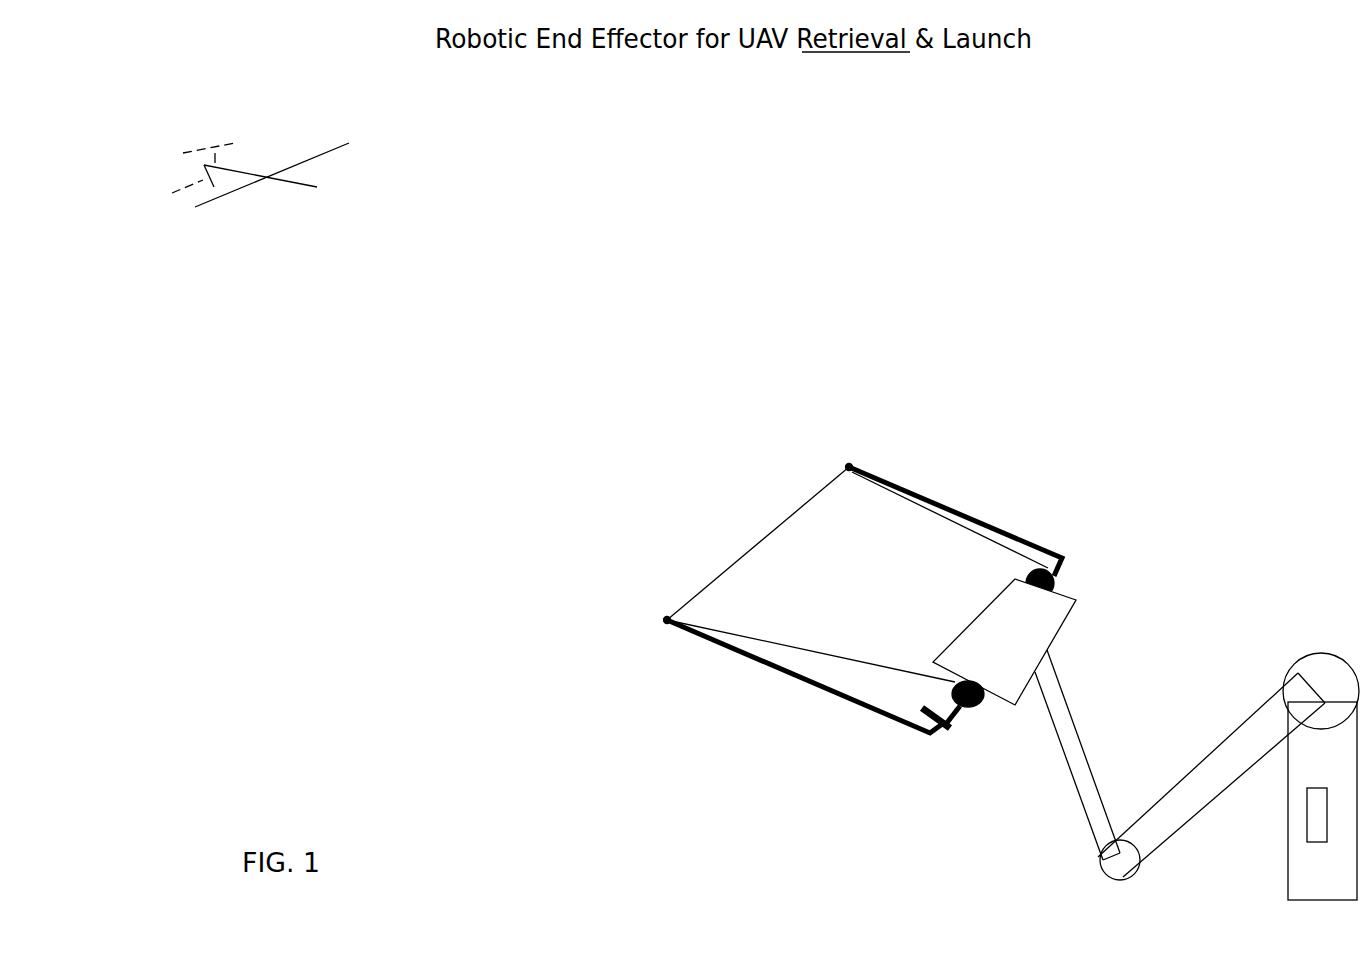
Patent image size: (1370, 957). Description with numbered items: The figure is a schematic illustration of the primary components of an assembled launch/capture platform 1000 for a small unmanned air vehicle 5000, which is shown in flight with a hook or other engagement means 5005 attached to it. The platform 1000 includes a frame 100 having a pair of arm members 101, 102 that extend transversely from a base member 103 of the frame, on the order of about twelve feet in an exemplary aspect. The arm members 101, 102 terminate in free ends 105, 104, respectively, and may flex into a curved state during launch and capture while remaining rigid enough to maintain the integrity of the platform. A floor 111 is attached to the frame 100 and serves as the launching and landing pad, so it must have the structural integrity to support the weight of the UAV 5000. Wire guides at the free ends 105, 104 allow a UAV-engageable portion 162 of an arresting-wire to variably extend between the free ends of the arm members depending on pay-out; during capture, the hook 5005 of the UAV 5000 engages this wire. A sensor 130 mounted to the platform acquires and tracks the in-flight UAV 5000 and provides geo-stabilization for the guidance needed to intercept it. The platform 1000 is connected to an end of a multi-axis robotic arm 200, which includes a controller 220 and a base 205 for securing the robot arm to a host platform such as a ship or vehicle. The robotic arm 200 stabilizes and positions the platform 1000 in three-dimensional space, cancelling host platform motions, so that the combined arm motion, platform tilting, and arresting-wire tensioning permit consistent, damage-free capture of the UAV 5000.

The unmanned air vehicle 5000 is at (373, 163).
The hook or other engagement means 5005 is at (243, 184).
The launch/capture platform 1000 is at (1038, 322).
The frame 100 is at (1088, 560).
The arm member 101 is at (800, 693).
The arm member 102 is at (968, 503).
The base member 103 is at (960, 712).
The free end 104 is at (852, 453).
The free end 105 is at (667, 633).
The floor 111 is at (1033, 615).
The sensor 130 is at (912, 733).
The UAV-engageable portion of the arresting-wire 162 is at (797, 499).
The multi-axis robotic arm 200 is at (1263, 677).
The base 205 is at (1285, 893).
The controller 220 is at (1305, 823).